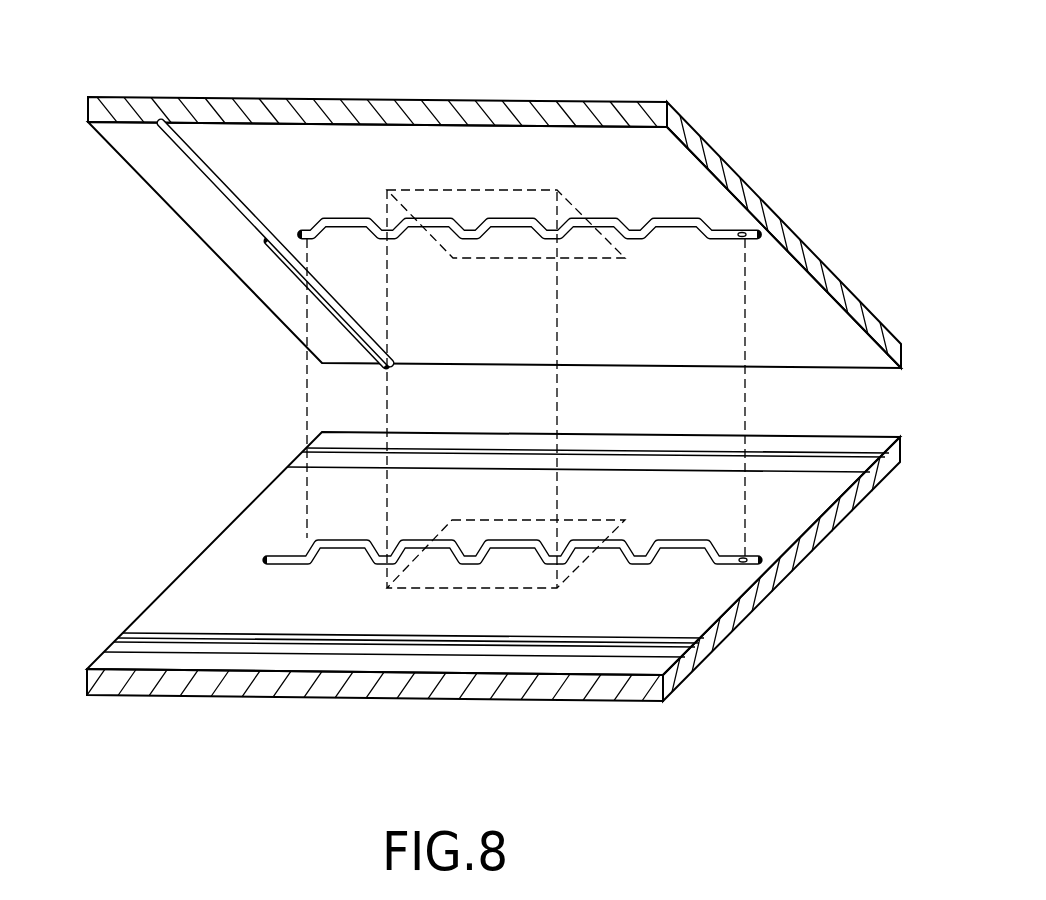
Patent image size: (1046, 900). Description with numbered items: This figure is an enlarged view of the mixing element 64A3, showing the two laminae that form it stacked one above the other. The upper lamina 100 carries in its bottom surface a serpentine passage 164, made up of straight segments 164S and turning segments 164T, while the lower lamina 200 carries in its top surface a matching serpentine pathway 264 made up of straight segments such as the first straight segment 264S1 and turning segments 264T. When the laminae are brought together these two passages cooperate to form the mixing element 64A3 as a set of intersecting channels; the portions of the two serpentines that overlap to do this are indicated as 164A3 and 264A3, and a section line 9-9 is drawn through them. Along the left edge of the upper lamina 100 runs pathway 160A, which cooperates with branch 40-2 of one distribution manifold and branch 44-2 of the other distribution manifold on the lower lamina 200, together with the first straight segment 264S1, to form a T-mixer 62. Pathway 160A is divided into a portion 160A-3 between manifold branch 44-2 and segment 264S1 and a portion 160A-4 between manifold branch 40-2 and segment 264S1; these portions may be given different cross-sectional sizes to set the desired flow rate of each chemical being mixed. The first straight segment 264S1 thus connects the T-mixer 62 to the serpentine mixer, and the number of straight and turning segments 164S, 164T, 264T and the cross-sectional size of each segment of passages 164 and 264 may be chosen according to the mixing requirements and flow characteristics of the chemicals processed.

The lamina 100 is at (165, 97).
The lamina 200 is at (645, 700).
The passages 164 is at (467, 211).
The straight segments 164S is at (313, 215).
The turning segments 164T is at (368, 228).
The serpentine pathway 264 is at (419, 642).
The first straight segment 264S1 is at (268, 561).
The turning segments 264T is at (352, 551).
The pathway 160A is at (210, 244).
The pathway portion 160A-3 is at (237, 205).
The pathway portion 160A-4 is at (287, 250).
The T-mixer 62 is at (268, 557).
The branch of distribution manifold 40-2 is at (302, 456).
The branch of distribution manifold 44-2 is at (122, 650).
The overlap region of first trace 164A3 is at (560, 240).
The overlap region of second trace 264A3 is at (571, 539).
The mixing element 64A3 is at (526, 389).
The section line 9-9 is at (560, 192).